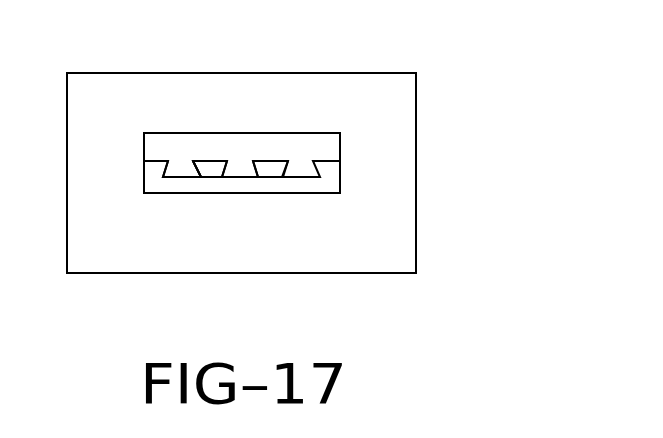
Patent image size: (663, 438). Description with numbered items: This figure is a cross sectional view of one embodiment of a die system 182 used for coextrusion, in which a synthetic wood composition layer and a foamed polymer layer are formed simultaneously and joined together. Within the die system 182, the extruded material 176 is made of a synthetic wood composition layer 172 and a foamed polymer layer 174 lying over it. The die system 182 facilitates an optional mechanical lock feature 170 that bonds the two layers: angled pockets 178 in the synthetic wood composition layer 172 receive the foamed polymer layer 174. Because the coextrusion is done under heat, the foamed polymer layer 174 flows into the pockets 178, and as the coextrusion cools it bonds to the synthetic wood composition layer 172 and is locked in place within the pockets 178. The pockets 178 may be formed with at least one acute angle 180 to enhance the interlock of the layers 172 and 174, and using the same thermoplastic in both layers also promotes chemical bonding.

The mechanical lock feature 170 is at (273, 156).
The synthetic wood composition layer 172 is at (322, 187).
The foamed polymer layer 174 is at (327, 147).
The extruded material 176 is at (162, 194).
The angled pockets 178 is at (175, 168).
The acute angle 180 is at (225, 166).
The die system 182 is at (417, 155).